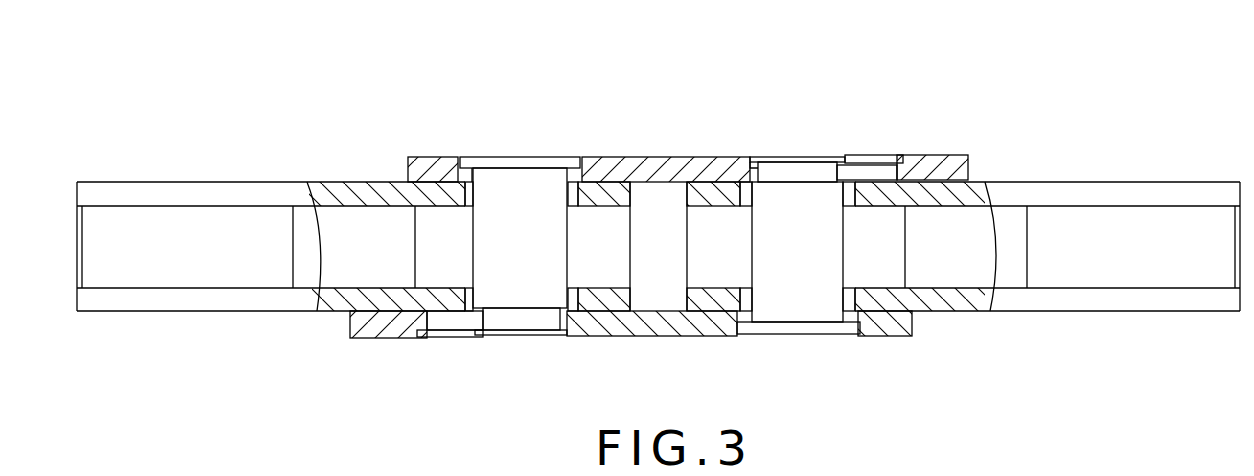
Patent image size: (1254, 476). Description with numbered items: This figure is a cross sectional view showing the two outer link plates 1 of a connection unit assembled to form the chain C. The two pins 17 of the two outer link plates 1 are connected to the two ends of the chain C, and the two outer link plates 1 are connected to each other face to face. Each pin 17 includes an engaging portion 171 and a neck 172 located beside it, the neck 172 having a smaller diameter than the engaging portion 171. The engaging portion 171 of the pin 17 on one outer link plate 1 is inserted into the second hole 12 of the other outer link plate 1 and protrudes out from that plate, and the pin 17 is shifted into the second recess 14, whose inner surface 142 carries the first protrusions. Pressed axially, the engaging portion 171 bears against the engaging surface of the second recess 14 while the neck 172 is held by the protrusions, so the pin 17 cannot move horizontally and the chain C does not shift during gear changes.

The outer link plate 1 is at (655, 167).
The second hole 12 is at (862, 160).
The second recess 14 is at (897, 171).
The inner surface 142 is at (888, 165).
The pin 17 is at (522, 185).
The engaging portion 171 is at (807, 160).
The neck 172 is at (772, 172).
The chain C is at (180, 197).